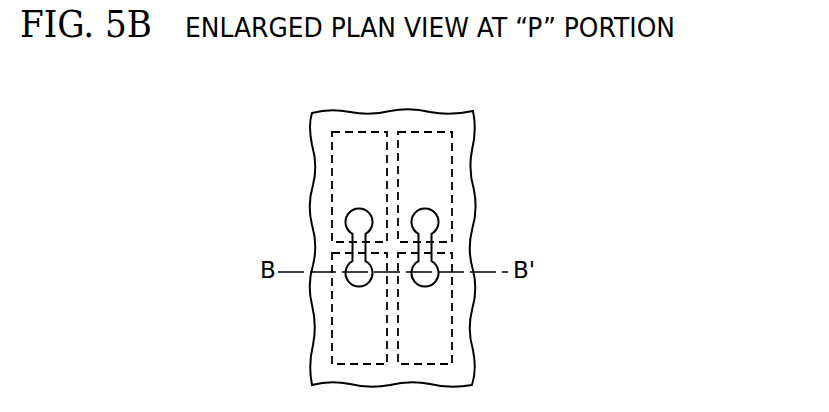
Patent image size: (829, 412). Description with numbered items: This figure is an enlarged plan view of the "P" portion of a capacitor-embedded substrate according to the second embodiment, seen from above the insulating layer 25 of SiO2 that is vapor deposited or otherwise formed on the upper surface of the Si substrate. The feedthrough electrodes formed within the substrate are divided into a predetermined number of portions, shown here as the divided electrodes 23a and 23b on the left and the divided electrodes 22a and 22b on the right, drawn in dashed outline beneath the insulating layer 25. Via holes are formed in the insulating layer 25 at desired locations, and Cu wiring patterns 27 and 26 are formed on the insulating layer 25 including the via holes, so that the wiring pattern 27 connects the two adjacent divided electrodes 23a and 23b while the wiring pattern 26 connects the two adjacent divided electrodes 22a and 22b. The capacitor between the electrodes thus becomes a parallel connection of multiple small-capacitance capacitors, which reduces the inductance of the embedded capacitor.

The insulating layer 25 is at (473, 170).
The divided electrode 23a is at (365, 143).
The divided electrode 22a is at (424, 143).
The divided electrode 23b is at (348, 328).
The divided electrode 22b is at (438, 327).
The wiring pattern 27 is at (355, 222).
The wiring pattern 26 is at (427, 223).